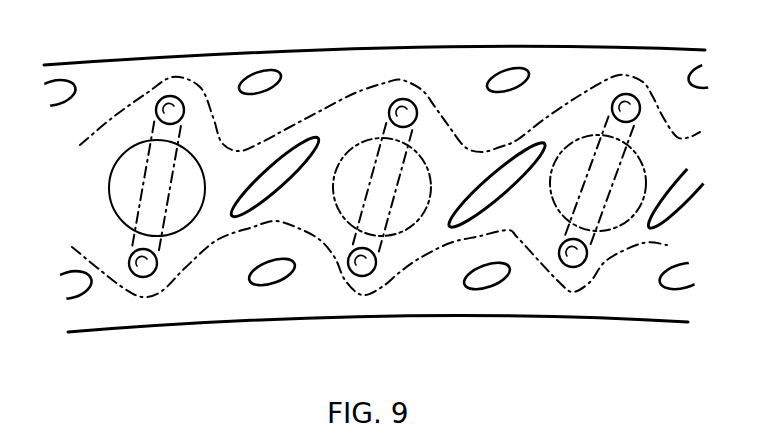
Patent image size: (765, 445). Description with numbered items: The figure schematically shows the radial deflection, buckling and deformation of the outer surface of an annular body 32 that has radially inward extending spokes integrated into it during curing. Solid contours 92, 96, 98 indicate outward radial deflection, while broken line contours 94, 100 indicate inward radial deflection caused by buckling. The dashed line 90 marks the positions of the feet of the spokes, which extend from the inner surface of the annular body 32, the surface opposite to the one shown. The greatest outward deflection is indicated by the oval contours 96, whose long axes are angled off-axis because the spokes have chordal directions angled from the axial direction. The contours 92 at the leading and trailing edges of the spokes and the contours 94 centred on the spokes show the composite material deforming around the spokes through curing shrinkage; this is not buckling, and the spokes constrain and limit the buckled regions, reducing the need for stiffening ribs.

The annular body 32 is at (133, 72).
The dashed line 90 is at (143, 190).
The solid contours 92 is at (137, 232).
The broken line contours 94 is at (110, 210).
The oval contours 96 is at (275, 193).
The solid contours 98 is at (498, 72).
The broken line contours 100 is at (635, 75).